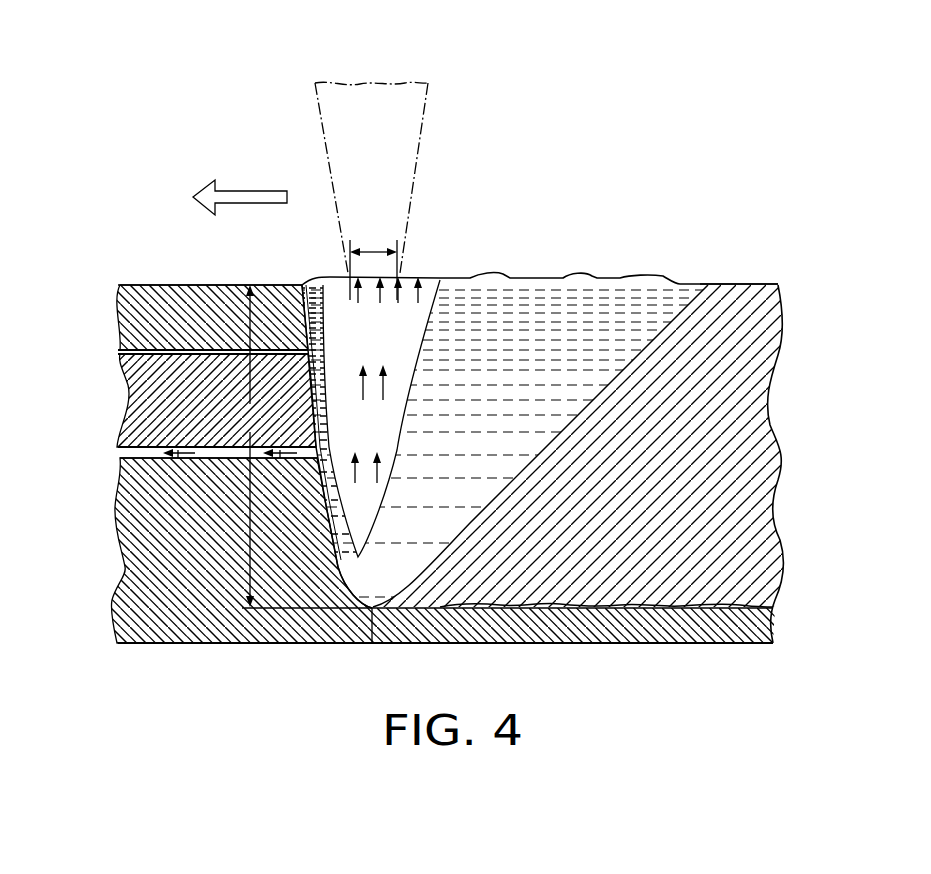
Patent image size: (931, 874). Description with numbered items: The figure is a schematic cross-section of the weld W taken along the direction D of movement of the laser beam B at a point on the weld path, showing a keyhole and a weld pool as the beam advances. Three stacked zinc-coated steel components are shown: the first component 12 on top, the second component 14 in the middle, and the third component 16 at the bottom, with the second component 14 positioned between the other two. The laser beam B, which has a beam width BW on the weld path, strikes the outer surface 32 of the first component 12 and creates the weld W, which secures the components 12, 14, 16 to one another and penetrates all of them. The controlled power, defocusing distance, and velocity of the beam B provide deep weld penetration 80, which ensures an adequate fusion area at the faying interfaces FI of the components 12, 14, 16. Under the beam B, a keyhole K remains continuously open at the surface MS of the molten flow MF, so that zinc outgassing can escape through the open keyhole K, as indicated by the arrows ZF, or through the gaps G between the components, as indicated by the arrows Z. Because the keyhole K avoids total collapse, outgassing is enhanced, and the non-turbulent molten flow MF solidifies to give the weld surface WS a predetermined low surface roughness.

The first component 12 is at (118, 317).
The second component 14 is at (118, 373).
The third component 16 is at (118, 553).
The outer surface 32 is at (175, 278).
The deep weld penetration 80 is at (249, 446).
The gaps G is at (213, 447).
The arrows indicating zinc outgassing through gaps Z is at (283, 463).
The direction of movement D is at (252, 191).
The laser beam B is at (415, 167).
The beam width BW is at (372, 250).
The keyhole K is at (432, 280).
The surface of the molten flow MS is at (513, 266).
The molten flow MF is at (590, 296).
The weld surface WS is at (745, 277).
The weld W is at (762, 317).
The faying interfaces FI is at (320, 320).
The arrows indicating zinc outgassing through keyhole ZF is at (310, 381).